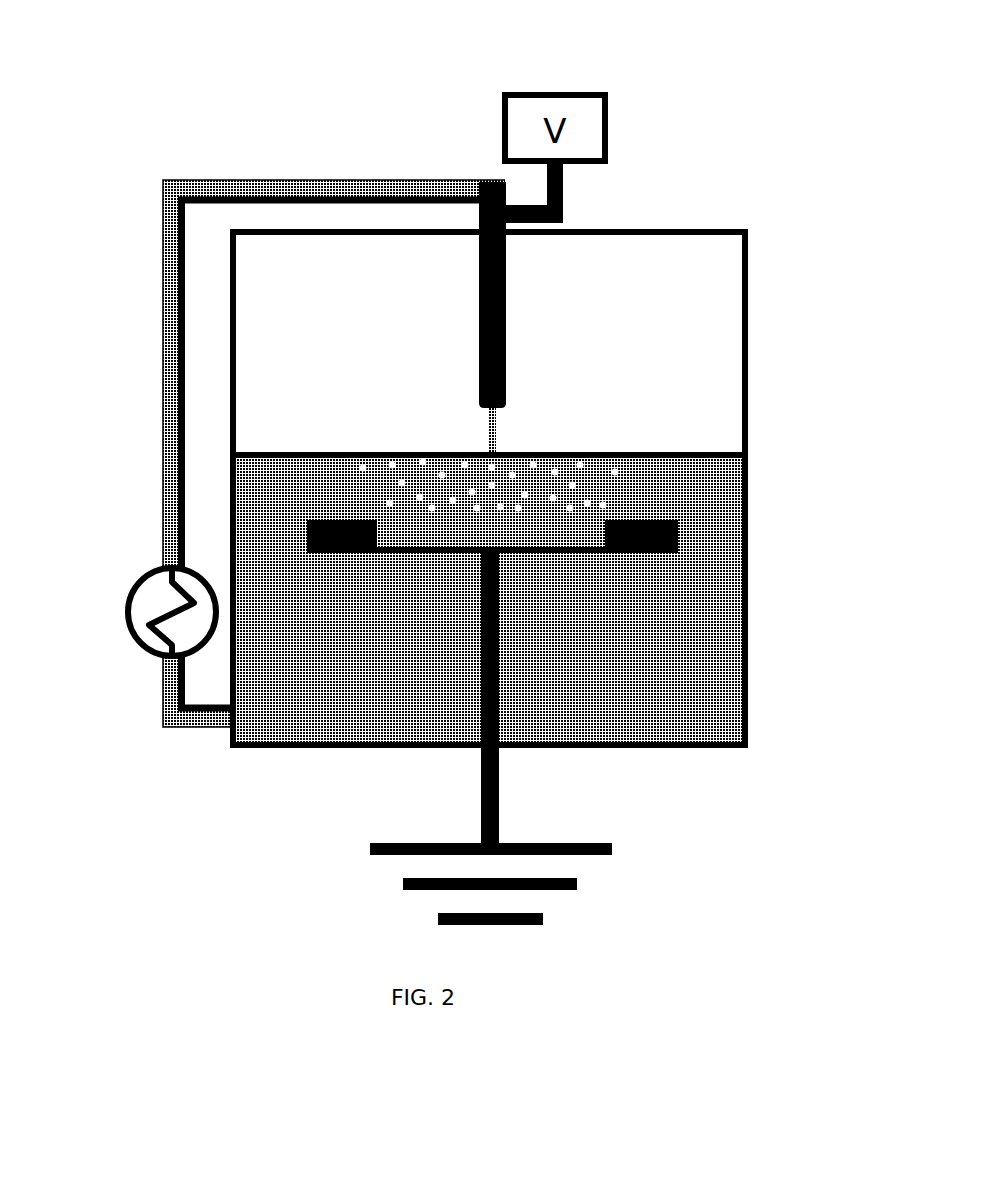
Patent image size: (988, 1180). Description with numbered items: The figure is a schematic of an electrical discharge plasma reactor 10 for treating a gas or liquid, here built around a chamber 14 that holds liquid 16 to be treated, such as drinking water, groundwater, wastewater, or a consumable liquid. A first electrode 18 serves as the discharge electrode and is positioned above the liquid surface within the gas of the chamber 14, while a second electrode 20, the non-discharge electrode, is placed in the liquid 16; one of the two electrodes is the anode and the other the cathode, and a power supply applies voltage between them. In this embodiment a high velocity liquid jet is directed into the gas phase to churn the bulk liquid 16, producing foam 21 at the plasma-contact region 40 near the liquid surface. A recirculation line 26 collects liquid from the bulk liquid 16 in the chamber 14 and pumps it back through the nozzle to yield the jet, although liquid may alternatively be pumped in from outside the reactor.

The electrical discharge plasma reactor 10 is at (98, 34).
The chamber 14 is at (742, 273).
The liquid 16 is at (733, 617).
The first electrode 18 is at (500, 335).
The second electrode 20 is at (481, 690).
The foam 21 is at (588, 483).
The circulation pipe with pump 26 is at (163, 320).
The plasma-contact region 40 is at (505, 440).